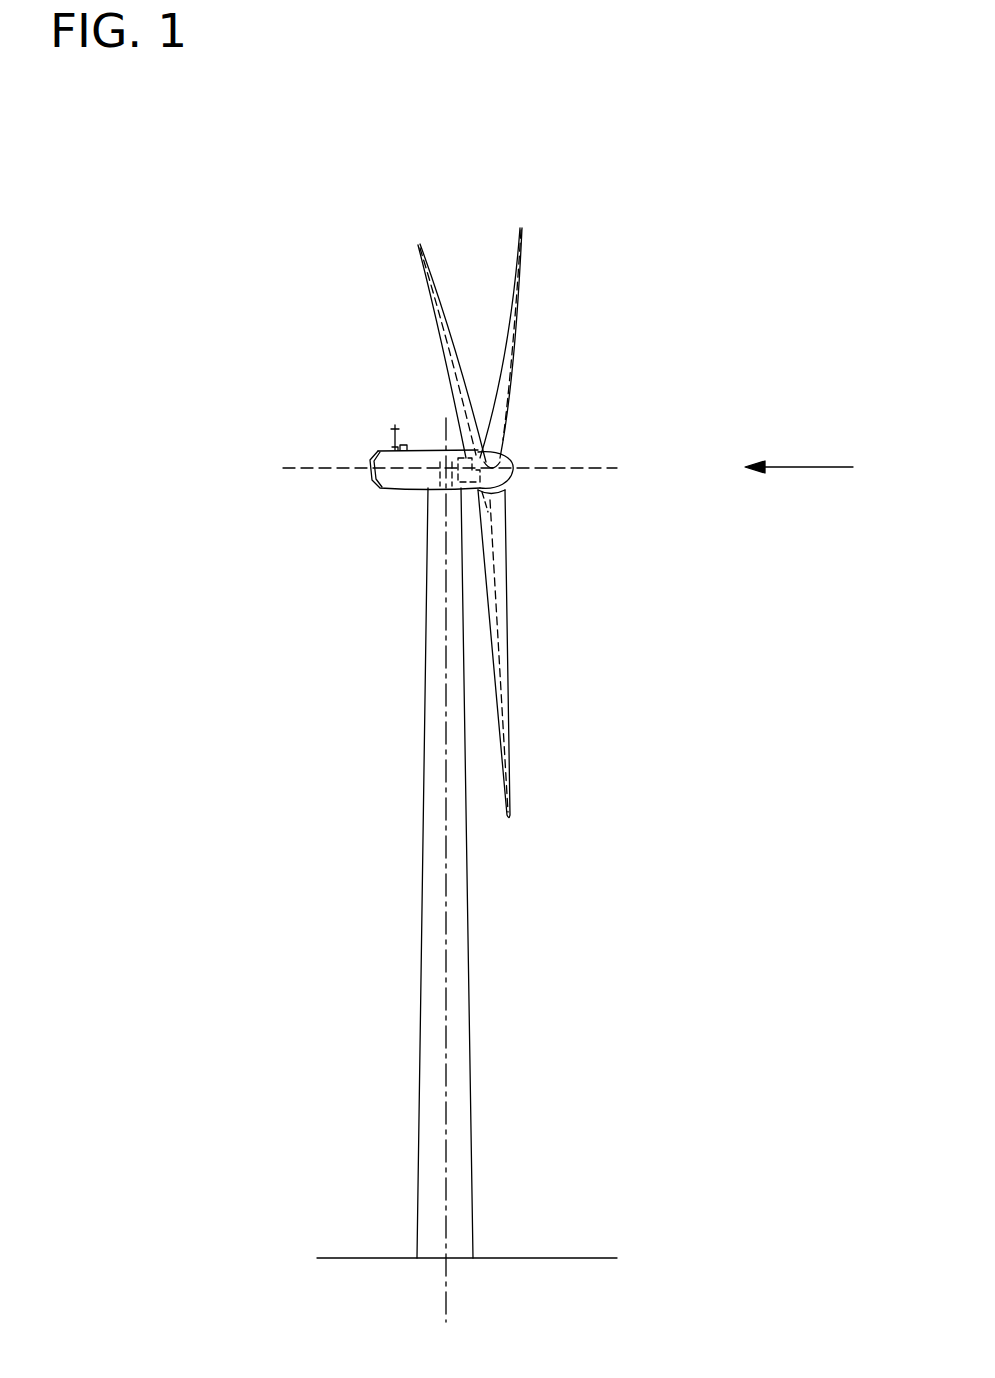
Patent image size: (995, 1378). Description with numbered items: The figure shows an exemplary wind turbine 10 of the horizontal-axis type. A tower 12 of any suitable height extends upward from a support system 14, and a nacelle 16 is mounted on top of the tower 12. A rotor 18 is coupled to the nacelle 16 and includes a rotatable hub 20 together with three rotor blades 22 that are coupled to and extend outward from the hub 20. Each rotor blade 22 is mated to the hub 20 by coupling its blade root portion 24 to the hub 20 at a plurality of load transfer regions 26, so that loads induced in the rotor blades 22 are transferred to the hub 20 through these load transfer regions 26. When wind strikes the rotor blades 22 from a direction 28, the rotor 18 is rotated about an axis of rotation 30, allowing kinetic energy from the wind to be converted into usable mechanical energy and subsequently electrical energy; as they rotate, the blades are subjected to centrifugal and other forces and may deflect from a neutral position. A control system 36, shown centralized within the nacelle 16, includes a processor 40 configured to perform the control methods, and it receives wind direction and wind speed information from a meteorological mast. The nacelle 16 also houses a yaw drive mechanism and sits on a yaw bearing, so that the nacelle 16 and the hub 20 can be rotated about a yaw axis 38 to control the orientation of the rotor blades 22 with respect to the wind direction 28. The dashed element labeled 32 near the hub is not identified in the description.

The wind turbine 10 is at (203, 252).
The tower 12 is at (418, 1030).
The support system 14 is at (375, 1258).
The nacelle 16 is at (400, 490).
The rotor 18 is at (514, 523).
The rotatable hub 20 is at (510, 462).
The rotor blade 22 is at (440, 316).
The blade root portion 24 is at (505, 573).
The load transfer region 26 is at (490, 495).
The direction 28 is at (820, 467).
The axis of rotation 30 is at (580, 470).
The pitch system 32 is at (480, 510).
The control system 36 is at (450, 505).
The yaw axis 38 is at (450, 917).
The processor 40 is at (453, 438).